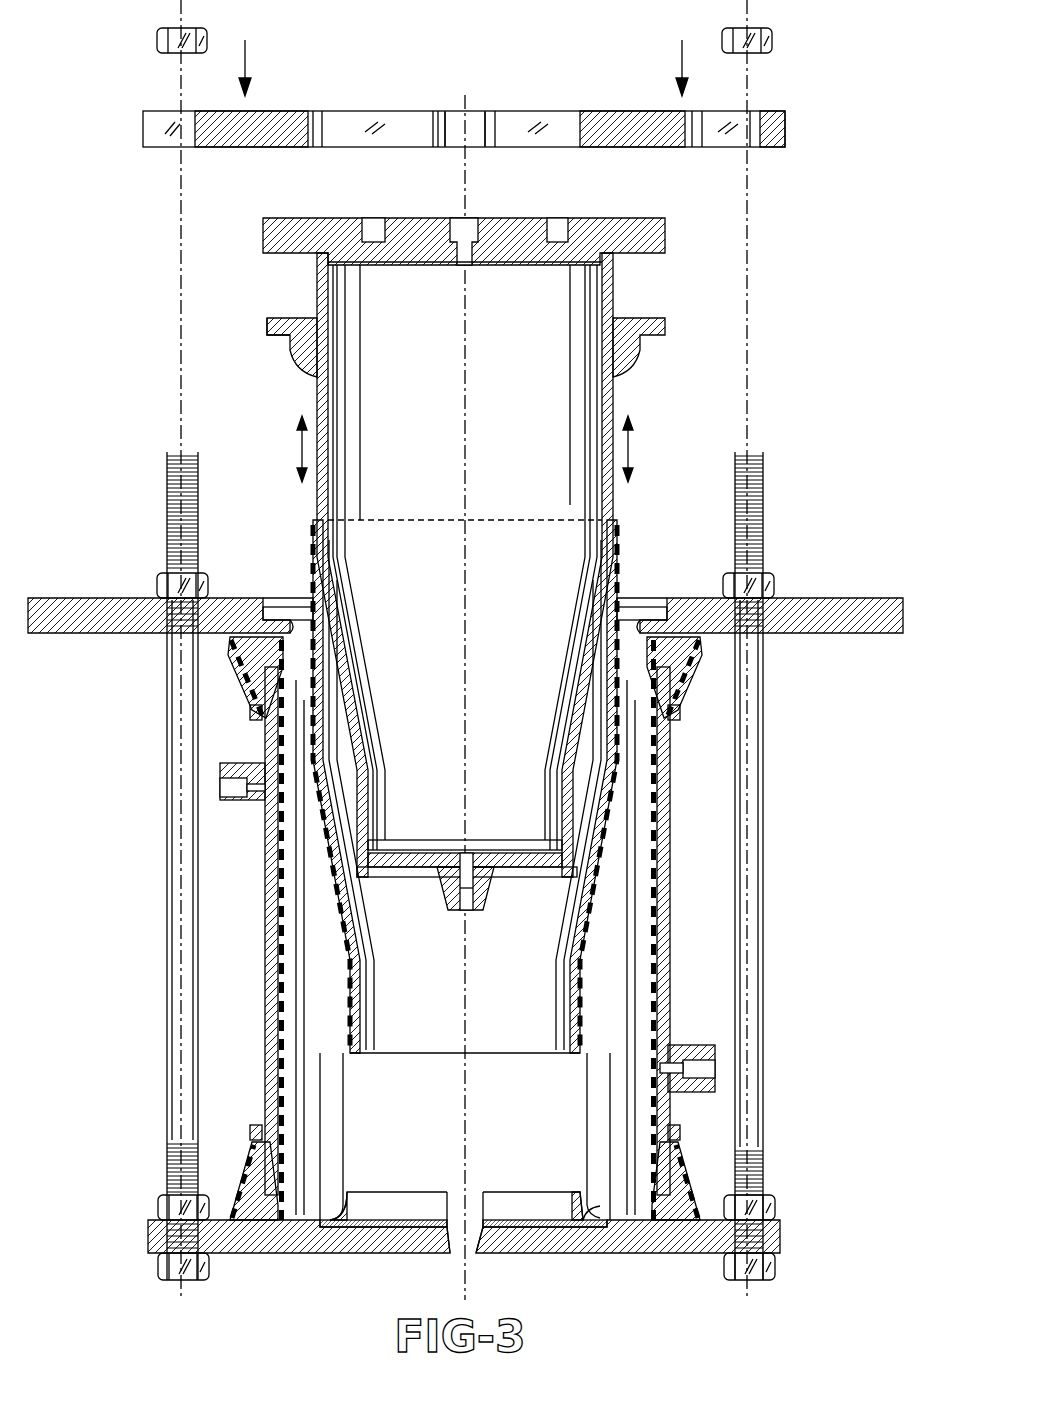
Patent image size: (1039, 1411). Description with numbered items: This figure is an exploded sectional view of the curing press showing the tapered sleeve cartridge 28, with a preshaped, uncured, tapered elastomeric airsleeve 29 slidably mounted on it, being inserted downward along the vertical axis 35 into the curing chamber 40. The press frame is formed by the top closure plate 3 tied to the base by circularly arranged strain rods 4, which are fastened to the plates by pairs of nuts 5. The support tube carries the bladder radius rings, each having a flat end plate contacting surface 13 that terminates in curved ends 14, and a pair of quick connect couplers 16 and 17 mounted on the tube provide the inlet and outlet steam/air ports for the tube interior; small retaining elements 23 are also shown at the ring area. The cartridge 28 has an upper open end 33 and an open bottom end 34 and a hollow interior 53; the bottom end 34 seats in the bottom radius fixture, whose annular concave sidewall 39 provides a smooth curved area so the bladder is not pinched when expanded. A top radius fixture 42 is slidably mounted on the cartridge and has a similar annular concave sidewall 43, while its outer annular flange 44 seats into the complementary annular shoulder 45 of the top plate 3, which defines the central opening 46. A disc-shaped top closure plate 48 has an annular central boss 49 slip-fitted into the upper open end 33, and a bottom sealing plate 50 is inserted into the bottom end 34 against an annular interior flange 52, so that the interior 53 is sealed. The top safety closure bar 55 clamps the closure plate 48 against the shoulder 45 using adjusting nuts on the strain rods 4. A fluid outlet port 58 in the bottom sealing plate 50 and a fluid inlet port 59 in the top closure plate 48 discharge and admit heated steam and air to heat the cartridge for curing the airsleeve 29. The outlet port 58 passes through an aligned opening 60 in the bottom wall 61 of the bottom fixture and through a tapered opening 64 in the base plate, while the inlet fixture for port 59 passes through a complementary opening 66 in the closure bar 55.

The top closure plate 3 is at (847, 598).
The strain rods 4 is at (763, 990).
The nuts 5 is at (772, 38).
The flat end plate contacting surface 13 is at (258, 643).
The curved ends 14 is at (275, 1220).
The quick connect coupler 16 is at (230, 763).
The quick connect coupler 17 is at (717, 1060).
The retainer lip 23 is at (680, 722).
The tapered sleeve cartridge 28 is at (625, 400).
The airsleeve 29 is at (580, 968).
The upper open end 33 is at (332, 290).
The open bottom end 34 is at (368, 872).
The vertical axis 35 is at (465, 430).
The annular concave sidewall 39 is at (590, 1215).
The curing chamber 40 is at (612, 880).
The top radius fixture 42 is at (300, 320).
The annular concave sidewall 43 is at (625, 360).
The outer annular flange 44 is at (272, 328).
The annular shoulder 45 is at (273, 613).
The central opening 46 is at (647, 613).
The top closure plate 48 is at (332, 222).
The annular central boss 49 is at (585, 262).
The bottom sealing plate 50 is at (520, 860).
The annular interior flange 52 is at (378, 848).
The hollow interior 53 is at (515, 298).
The top safety closure bar 55 is at (262, 118).
The fluid outlet port 58 is at (462, 905).
The fluid inlet port 59 is at (470, 222).
The aligned opening 60 is at (441, 1215).
The bottom wall 61 is at (528, 1220).
The tapered opening 64 is at (450, 1240).
The opening 66 is at (482, 132).